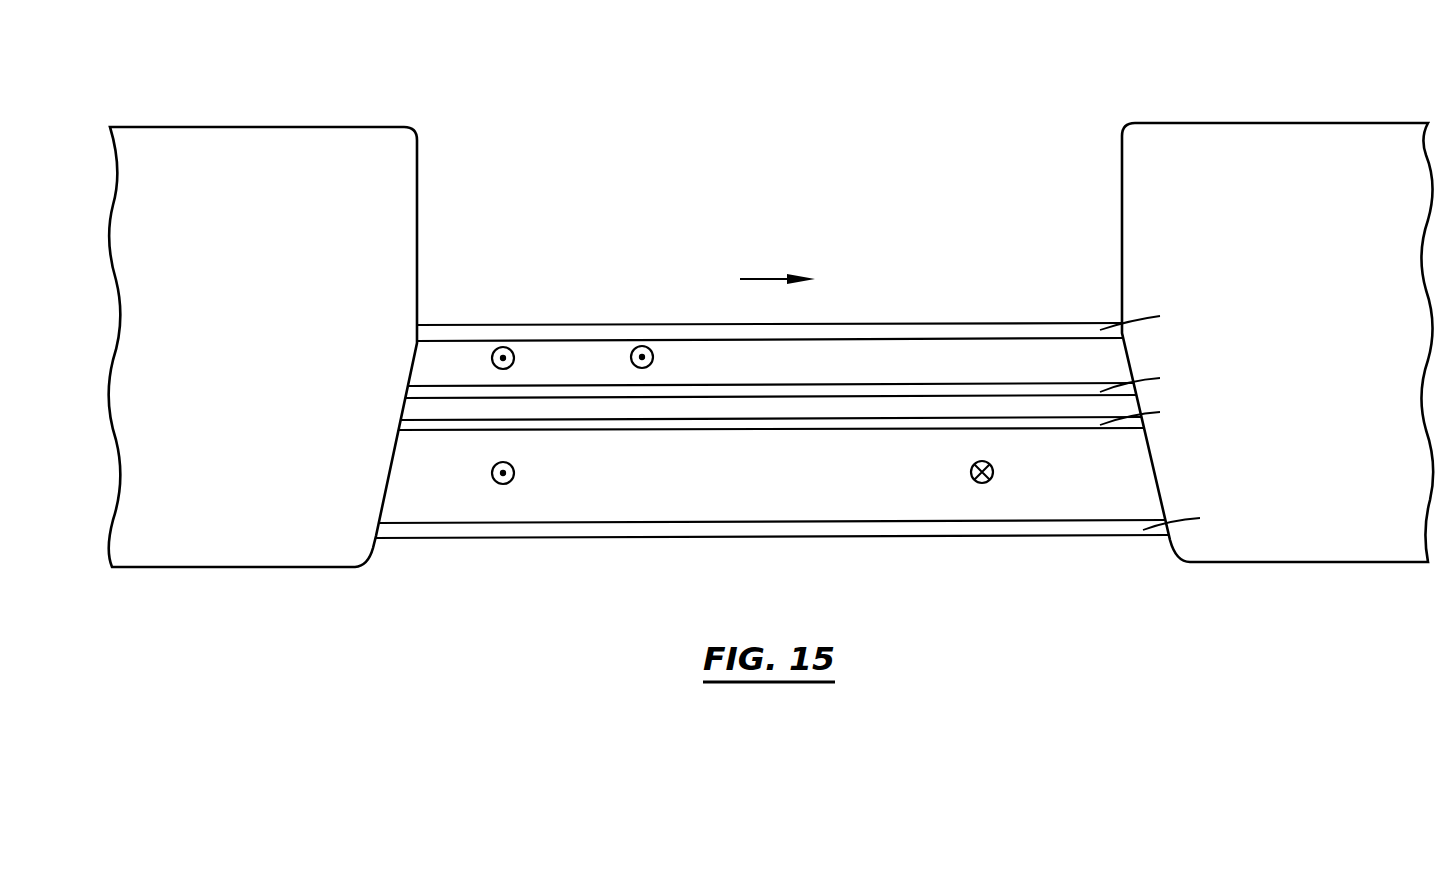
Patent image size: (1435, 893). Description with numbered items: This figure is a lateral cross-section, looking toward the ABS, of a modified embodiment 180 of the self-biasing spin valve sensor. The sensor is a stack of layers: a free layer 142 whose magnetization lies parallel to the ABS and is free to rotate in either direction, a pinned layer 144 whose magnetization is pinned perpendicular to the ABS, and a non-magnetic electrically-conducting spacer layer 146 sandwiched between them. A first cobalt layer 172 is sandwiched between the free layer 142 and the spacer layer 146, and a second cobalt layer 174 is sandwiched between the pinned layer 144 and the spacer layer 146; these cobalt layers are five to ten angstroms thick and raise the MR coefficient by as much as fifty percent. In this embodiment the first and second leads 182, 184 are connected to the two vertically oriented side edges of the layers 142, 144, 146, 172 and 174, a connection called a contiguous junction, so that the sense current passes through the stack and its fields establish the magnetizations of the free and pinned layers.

The modified embodiment 180 is at (801, 318).
The first lead 182 is at (252, 145).
The second lead 184 is at (1216, 143).
The free layer 142 is at (925, 500).
The pinned layer 144 is at (1057, 355).
The spacer layer 146 is at (997, 407).
The first cobalt layer 172 is at (705, 425).
The second cobalt layer 174 is at (620, 387).